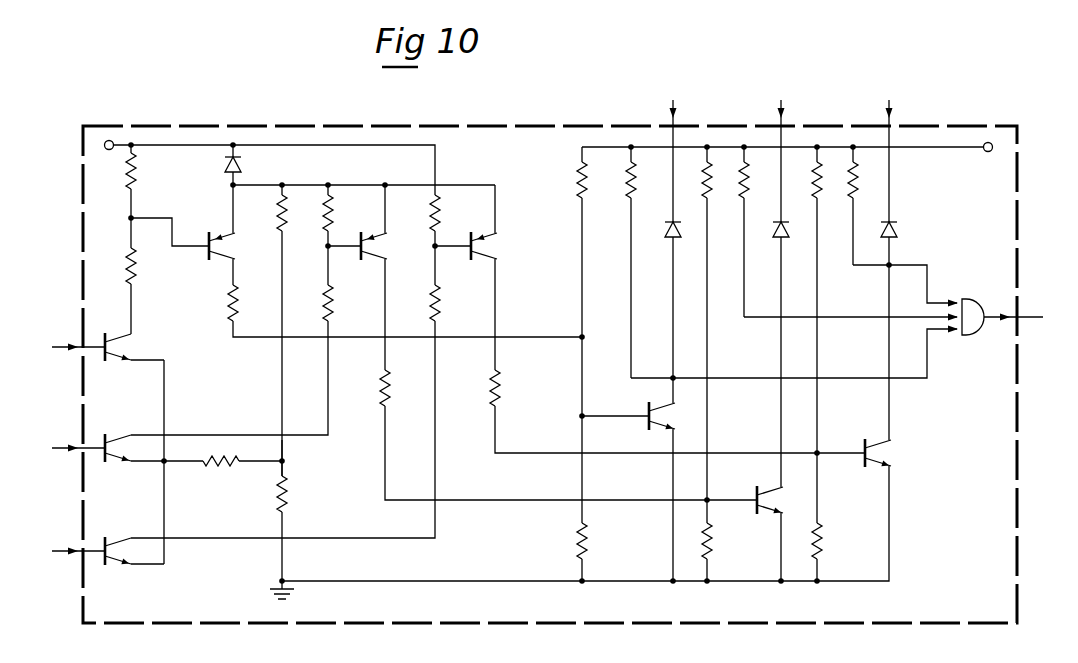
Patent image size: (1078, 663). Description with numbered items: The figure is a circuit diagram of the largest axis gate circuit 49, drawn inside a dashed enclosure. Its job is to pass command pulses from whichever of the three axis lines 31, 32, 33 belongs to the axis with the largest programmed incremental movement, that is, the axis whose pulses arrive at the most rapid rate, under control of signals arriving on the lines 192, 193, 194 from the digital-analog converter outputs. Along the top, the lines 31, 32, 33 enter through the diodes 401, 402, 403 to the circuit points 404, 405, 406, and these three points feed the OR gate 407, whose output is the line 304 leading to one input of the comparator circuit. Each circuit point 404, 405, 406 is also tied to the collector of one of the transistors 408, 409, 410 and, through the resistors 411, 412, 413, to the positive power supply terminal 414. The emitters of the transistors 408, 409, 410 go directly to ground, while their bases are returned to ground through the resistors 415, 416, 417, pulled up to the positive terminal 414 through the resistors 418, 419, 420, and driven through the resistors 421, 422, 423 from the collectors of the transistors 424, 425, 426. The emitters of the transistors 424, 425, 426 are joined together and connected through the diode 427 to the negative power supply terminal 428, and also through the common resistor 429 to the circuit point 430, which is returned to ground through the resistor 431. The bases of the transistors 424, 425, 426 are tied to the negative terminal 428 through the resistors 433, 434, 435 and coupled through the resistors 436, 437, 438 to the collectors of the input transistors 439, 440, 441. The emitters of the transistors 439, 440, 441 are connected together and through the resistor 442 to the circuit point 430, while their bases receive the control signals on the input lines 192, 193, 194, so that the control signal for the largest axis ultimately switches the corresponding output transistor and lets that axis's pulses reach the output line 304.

The largest axis gate circuit 49 is at (525, 122).
The x line 31 is at (676, 108).
The y line 32 is at (784, 108).
The z line 33 is at (892, 108).
The control signal line 192 is at (72, 348).
The control signal line 193 is at (72, 449).
The control signal line 194 is at (72, 552).
The output line 304 is at (1029, 322).
The diode 401 is at (681, 228).
The diode 402 is at (789, 228).
The diode 403 is at (897, 228).
The circuit point 404 is at (669, 375).
The circuit point 405 is at (776, 320).
The circuit point 406 is at (881, 270).
The OR gate 407 is at (965, 337).
The transistor 408 is at (654, 420).
The transistor 409 is at (762, 504).
The transistor 410 is at (870, 457).
The resistor 411 is at (636, 192).
The resistor 412 is at (749, 193).
The resistor 413 is at (858, 192).
The positive power supply terminal 414 is at (990, 152).
The resistor 415 is at (587, 528).
The resistor 416 is at (716, 526).
The resistor 417 is at (822, 528).
The resistor 418 is at (587, 195).
The resistor 419 is at (712, 195).
The resistor 420 is at (822, 195).
The resistor 421 is at (238, 294).
The resistor 422 is at (390, 379).
The resistor 423 is at (500, 379).
The transistor 424 is at (214, 252).
The transistor 425 is at (366, 252).
The transistor 426 is at (476, 252).
The diode 427 is at (241, 165).
The negative power supply terminal 428 is at (105, 149).
The common resistor 429 is at (287, 204).
The circuit point 430 is at (285, 463).
The resistor 431 is at (287, 493).
The resistor 433 is at (136, 168).
The resistor 434 is at (333, 204).
The resistor 435 is at (440, 204).
The resistor 436 is at (136, 262).
The resistor 437 is at (333, 294).
The resistor 438 is at (440, 294).
The transistor 439 is at (110, 349).
The transistor 440 is at (110, 451).
The transistor 441 is at (110, 554).
The resistor 442 is at (208, 454).